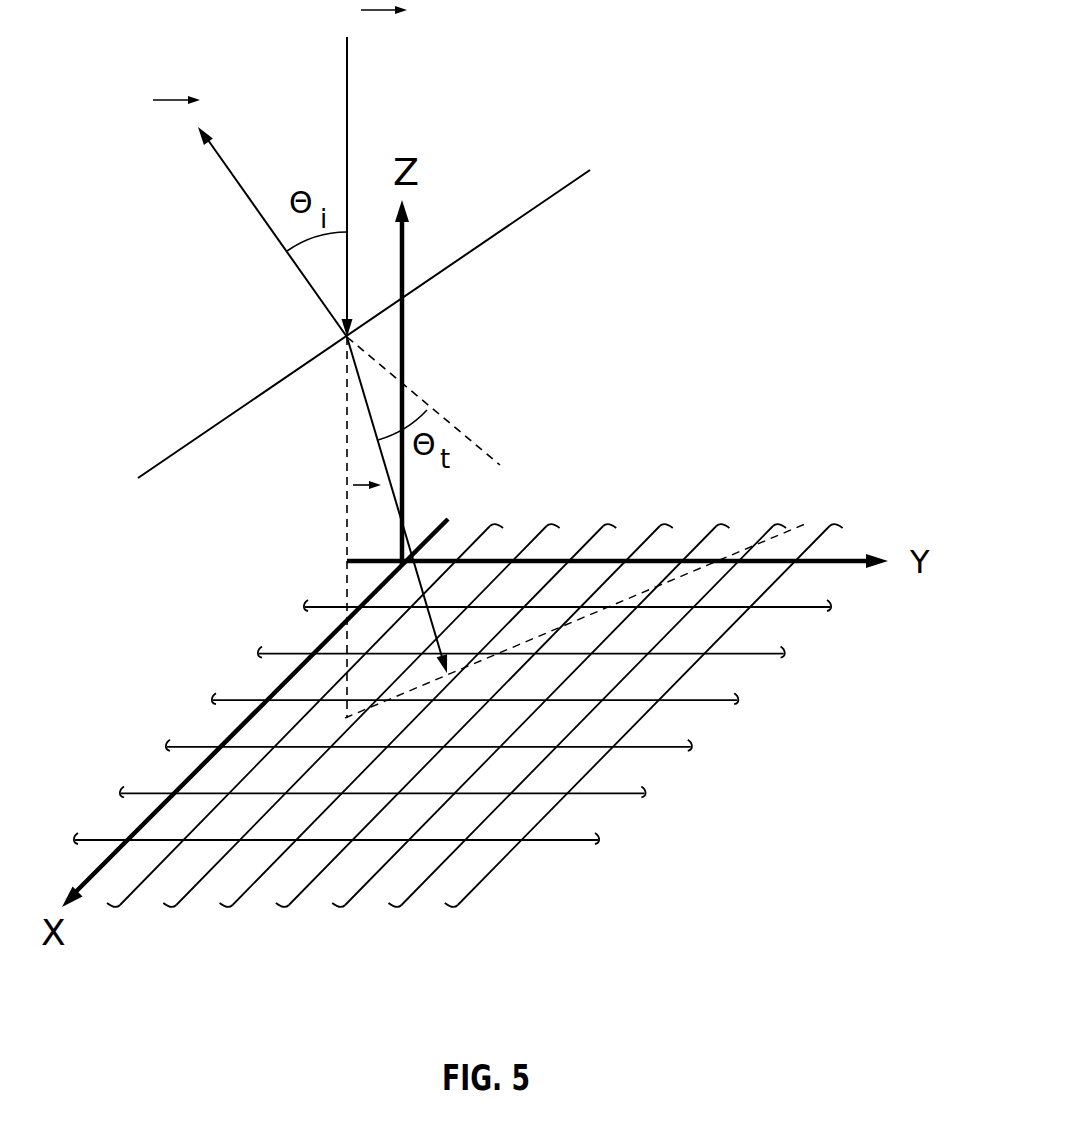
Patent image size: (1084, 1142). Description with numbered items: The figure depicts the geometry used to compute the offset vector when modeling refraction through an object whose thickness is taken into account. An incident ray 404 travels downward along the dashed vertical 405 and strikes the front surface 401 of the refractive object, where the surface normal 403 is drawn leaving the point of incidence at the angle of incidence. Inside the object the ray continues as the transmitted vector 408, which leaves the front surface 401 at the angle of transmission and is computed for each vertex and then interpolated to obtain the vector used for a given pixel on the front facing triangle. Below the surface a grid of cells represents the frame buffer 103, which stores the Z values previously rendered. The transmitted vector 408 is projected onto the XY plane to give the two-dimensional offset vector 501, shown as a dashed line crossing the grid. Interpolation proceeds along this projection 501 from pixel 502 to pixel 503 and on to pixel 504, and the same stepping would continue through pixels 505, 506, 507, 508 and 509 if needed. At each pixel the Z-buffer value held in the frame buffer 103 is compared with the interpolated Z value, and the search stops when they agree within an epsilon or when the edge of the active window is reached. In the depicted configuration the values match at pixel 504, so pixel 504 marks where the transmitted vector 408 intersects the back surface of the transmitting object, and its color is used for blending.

The frame buffer 103 is at (637, 824).
The front surface 401 is at (535, 209).
The surface normal N 403 is at (265, 218).
The incident ray I 404 is at (347, 99).
The vertical projection line 405 is at (346, 450).
The transmitted vector 408 is at (370, 417).
The offset vector 501 is at (737, 560).
The pixel 502 is at (321, 731).
The pixel 503 is at (376, 731).
The pixel 504 is at (424, 673).
The pixel 505 is at (478, 687).
The pixel 506 is at (539, 628).
The pixel 507 is at (581, 641).
The pixel 508 is at (640, 581).
The pixel 509 is at (681, 596).